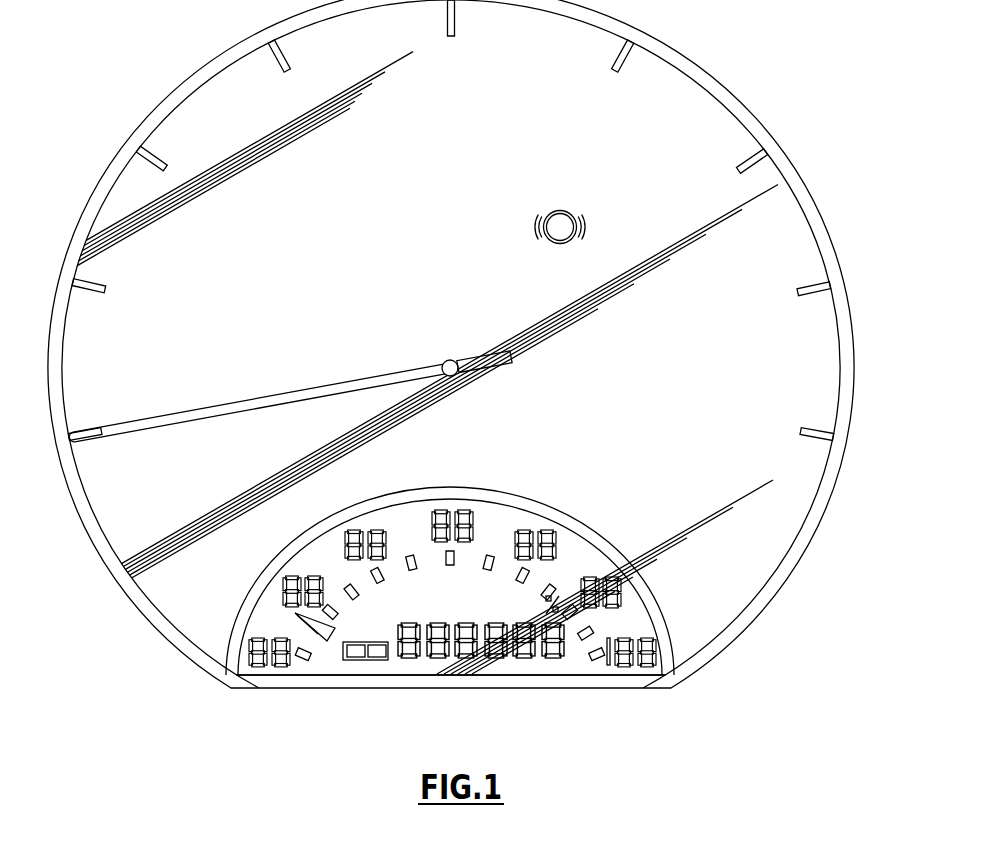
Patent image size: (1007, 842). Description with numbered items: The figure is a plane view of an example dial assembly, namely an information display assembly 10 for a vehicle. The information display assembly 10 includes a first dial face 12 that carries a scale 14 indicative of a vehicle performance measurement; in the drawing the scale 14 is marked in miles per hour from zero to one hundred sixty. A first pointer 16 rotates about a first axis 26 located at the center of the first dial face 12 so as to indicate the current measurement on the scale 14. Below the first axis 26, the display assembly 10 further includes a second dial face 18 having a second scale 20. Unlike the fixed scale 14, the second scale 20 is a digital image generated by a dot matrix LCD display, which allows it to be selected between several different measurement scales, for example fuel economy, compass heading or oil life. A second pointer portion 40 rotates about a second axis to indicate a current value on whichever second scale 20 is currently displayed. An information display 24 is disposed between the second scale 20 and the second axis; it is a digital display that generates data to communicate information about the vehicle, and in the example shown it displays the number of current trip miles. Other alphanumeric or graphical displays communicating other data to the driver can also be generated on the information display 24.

The information display assembly 10 is at (484, 365).
The first dial face 12 is at (762, 243).
The scale 14 is at (810, 252).
The first pointer 16 is at (256, 406).
The second dial face 18 is at (582, 562).
The second scale 20 is at (632, 618).
The information display 24 is at (450, 679).
The first axis 26 is at (447, 356).
The second pointer portion 40 is at (319, 643).